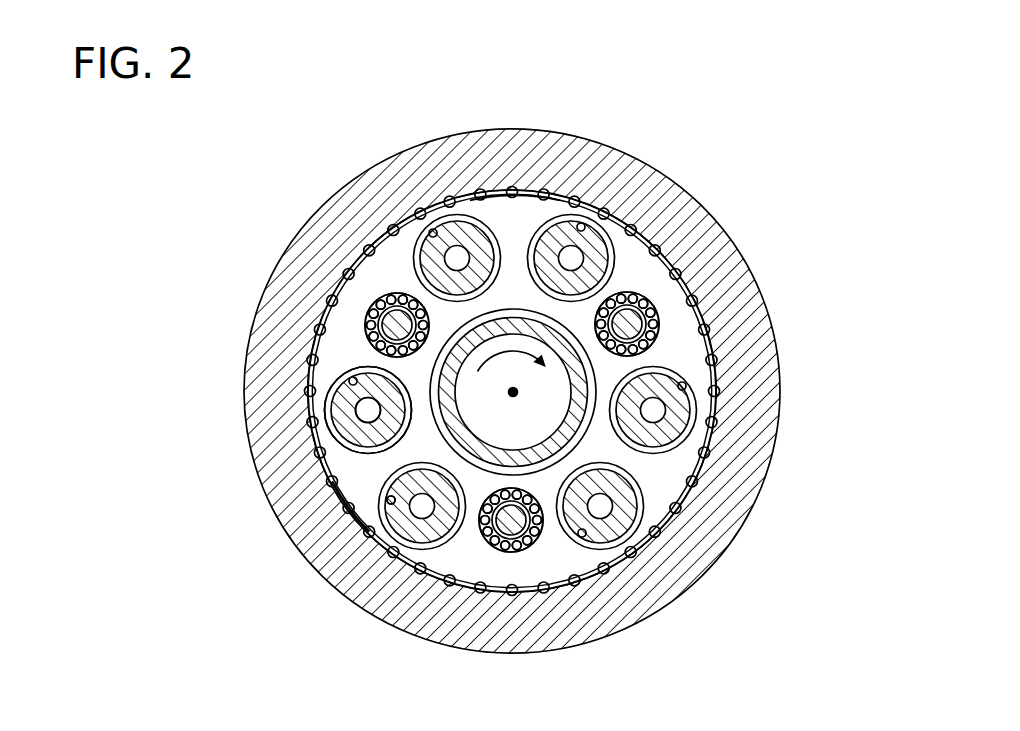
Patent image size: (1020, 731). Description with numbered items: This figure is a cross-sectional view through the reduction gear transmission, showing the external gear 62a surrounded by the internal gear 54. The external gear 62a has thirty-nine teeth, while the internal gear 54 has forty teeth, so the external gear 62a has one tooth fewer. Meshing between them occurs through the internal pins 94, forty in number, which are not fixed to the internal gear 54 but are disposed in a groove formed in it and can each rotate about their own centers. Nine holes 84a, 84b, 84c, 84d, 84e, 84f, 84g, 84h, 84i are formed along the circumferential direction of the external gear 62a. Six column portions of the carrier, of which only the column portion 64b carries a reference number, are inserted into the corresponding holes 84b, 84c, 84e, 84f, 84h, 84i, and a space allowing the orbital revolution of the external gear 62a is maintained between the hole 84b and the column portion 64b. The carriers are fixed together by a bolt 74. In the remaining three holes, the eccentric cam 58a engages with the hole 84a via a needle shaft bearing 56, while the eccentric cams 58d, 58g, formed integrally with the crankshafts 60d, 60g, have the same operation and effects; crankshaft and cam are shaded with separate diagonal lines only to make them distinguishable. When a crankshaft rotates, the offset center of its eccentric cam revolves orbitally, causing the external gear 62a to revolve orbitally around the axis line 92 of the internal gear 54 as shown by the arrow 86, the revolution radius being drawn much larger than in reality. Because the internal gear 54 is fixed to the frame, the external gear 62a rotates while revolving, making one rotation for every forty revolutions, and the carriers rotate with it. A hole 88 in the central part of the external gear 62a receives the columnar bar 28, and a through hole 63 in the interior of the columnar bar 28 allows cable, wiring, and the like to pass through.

The columnar bar 28 is at (578, 377).
The internal gear 54 is at (433, 163).
The needle shaft bearing 56 is at (382, 297).
The eccentric cam 58a is at (373, 303).
The eccentric cam 58d is at (523, 546).
The eccentric cam 58g is at (656, 316).
The crankshaft 60d is at (545, 540).
The crankshaft 60g is at (625, 293).
The external gear 62a is at (527, 213).
The through hole 63 is at (386, 493).
The column portion 64b is at (356, 435).
The bolt 74 is at (355, 403).
The hole 84a is at (377, 297).
The hole 84b is at (349, 380).
The hole 84c is at (385, 528).
The hole 84d is at (471, 538).
The hole 84e is at (586, 537).
The hole 84f is at (686, 385).
The hole 84g is at (643, 297).
The hole 84h is at (583, 225).
The hole 84i is at (431, 230).
The arrow 86 is at (515, 352).
The hole 88 is at (330, 470).
The axis line 92 is at (516, 394).
The internal pins 94 is at (370, 250).